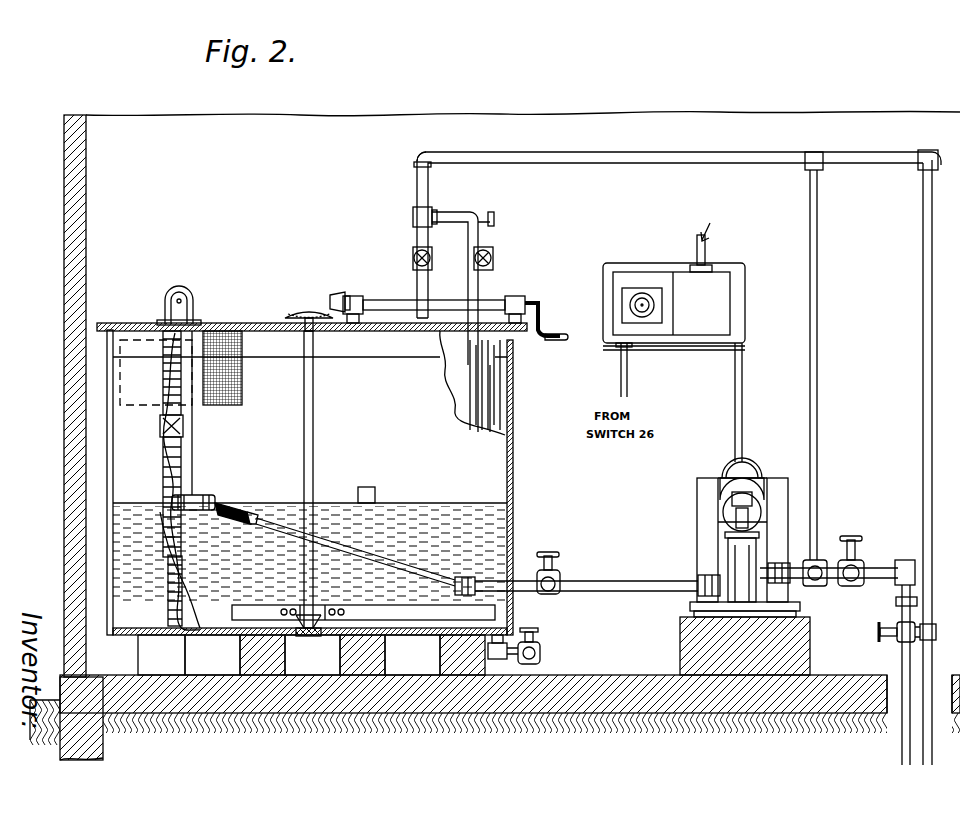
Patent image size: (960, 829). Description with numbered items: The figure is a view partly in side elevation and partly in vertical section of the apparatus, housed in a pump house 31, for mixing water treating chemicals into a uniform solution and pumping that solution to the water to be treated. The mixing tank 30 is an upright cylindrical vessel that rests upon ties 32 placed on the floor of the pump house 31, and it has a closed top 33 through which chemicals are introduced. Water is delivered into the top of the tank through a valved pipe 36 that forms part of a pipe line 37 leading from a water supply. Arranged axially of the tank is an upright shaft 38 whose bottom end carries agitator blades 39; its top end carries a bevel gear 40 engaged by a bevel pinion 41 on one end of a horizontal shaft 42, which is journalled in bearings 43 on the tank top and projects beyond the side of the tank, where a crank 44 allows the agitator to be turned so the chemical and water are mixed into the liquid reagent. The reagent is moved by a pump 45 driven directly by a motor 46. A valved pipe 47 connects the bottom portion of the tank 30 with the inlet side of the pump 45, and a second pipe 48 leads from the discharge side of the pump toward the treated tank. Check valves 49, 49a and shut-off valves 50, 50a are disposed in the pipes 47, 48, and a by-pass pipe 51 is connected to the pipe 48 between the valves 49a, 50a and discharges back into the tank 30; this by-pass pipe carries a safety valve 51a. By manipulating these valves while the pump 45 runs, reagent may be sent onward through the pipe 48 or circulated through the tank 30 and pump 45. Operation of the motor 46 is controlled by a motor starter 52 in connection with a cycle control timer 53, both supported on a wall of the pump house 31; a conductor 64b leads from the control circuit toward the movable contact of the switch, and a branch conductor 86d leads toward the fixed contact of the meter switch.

The mixing tank 30 is at (524, 424).
The pump house 31 is at (56, 272).
The ties 32 is at (220, 655).
The closed top 33 is at (268, 323).
The valved pipe 36 is at (417, 283).
The pipe line 37 is at (923, 455).
The upright shaft 38 is at (314, 400).
The agitator blades 39 is at (266, 605).
The bevel gear 40 is at (306, 312).
The bevel pinion 41 is at (342, 288).
The horizontal shaft 42 is at (478, 302).
The bearings 43 is at (358, 296).
The crank 44 is at (546, 318).
The pump 45 is at (688, 498).
The motor 46 is at (759, 458).
The valved pipe 47 is at (580, 592).
The second pipe 48 is at (902, 655).
The check valve 49 is at (700, 578).
The check valve 49a is at (788, 582).
The shut-off valve 50 is at (552, 566).
The shut-off valve 50a is at (864, 562).
The by-pass pipe 51 is at (818, 345).
The safety valve 51a is at (827, 552).
The motor starter 52 is at (742, 264).
The cycle control timer 53 is at (639, 261).
The conductor 64b is at (614, 395).
The branch conductor 86d is at (692, 402).